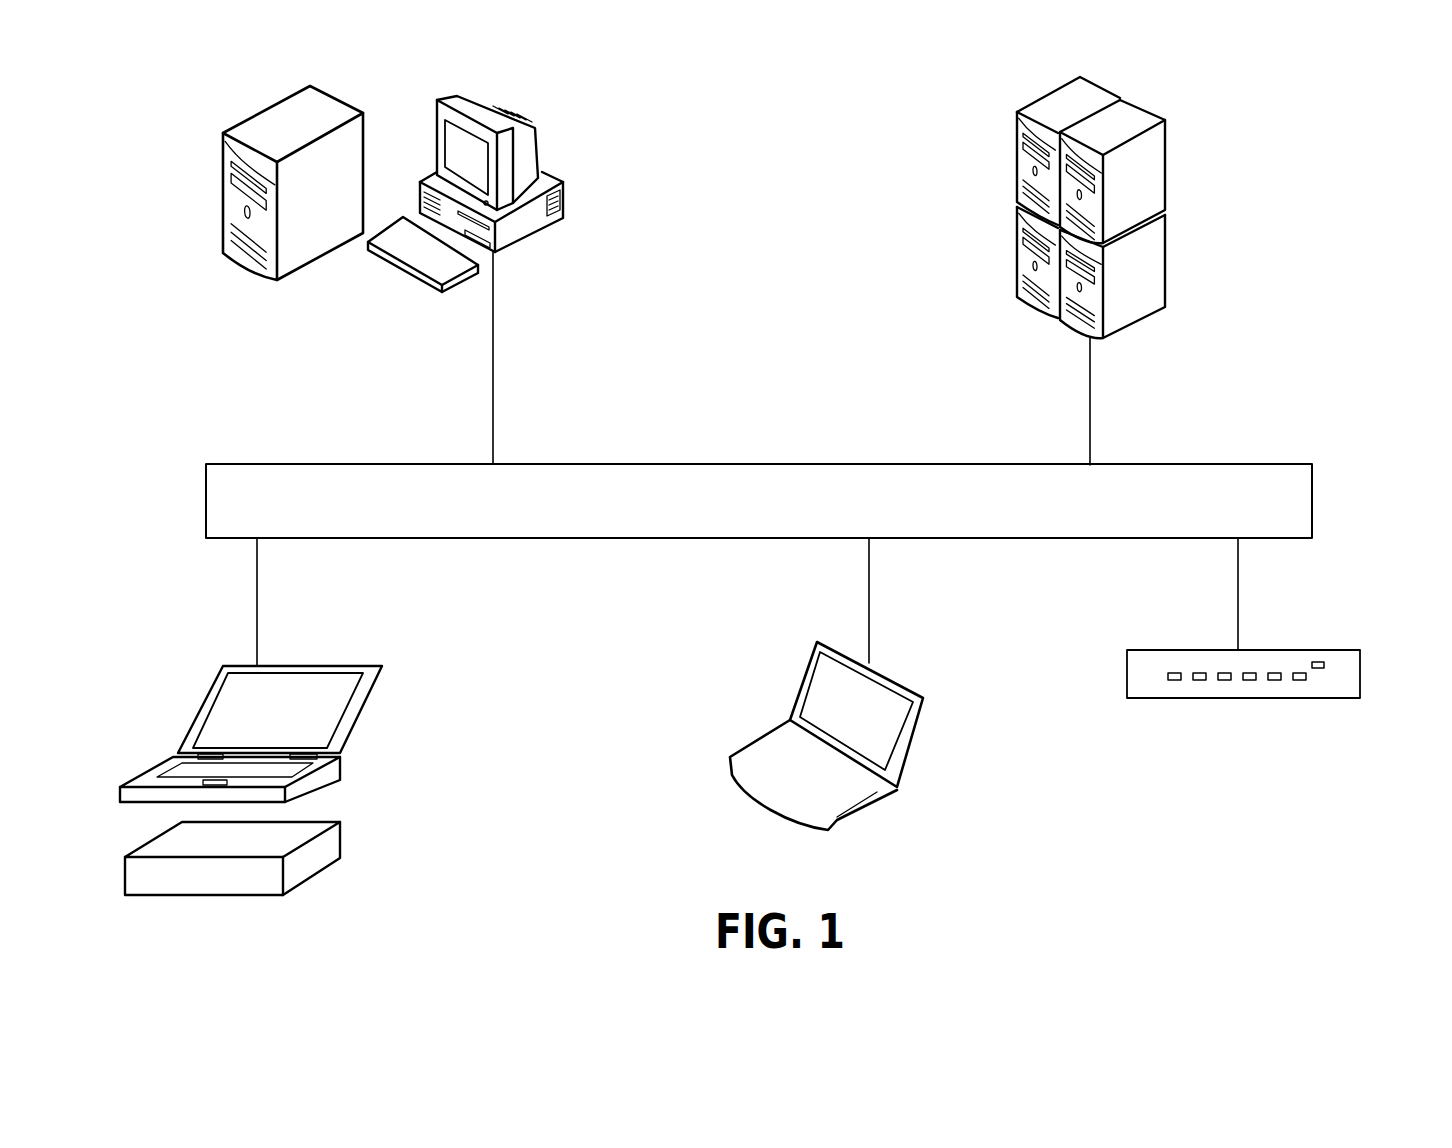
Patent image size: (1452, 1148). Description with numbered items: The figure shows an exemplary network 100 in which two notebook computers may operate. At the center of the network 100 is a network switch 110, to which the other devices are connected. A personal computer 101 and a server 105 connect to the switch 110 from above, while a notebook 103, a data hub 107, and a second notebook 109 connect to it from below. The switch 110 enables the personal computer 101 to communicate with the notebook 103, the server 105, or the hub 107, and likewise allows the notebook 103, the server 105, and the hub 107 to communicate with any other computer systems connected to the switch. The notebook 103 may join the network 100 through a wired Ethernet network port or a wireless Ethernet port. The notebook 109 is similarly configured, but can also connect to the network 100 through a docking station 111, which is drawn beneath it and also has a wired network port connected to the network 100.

The network 100 is at (897, 341).
The personal computer 101 is at (583, 197).
The notebook 103 is at (918, 727).
The server 105 is at (1163, 120).
The data hub 107 is at (1342, 650).
The notebook 109 is at (363, 699).
The network switch 110 is at (1285, 465).
The docking station 111 is at (320, 843).